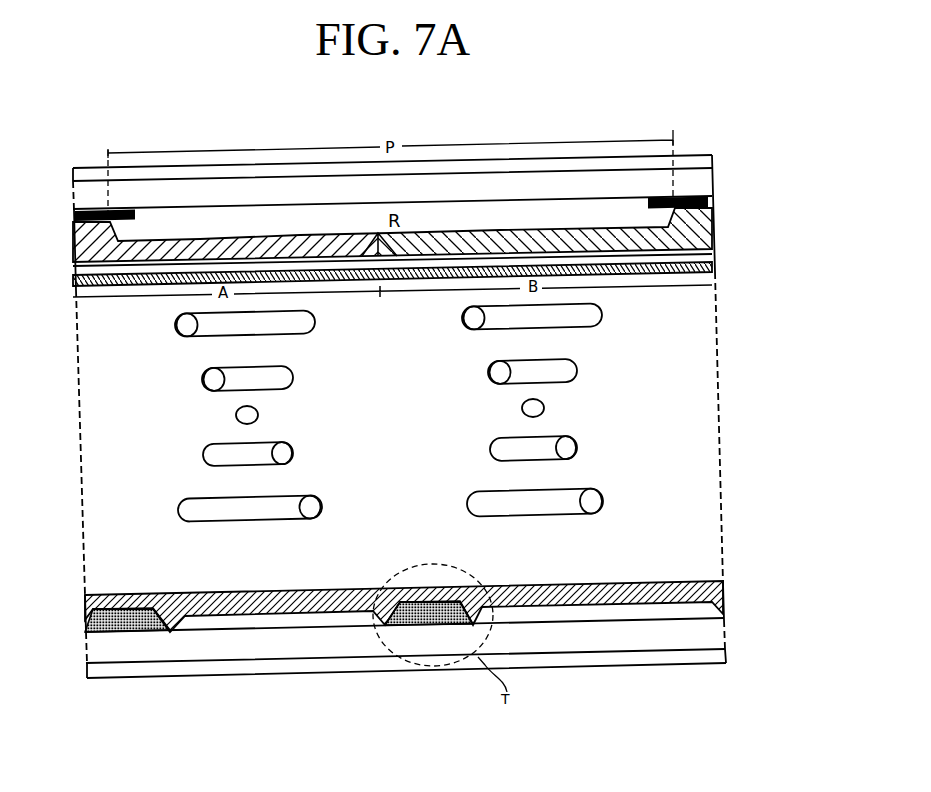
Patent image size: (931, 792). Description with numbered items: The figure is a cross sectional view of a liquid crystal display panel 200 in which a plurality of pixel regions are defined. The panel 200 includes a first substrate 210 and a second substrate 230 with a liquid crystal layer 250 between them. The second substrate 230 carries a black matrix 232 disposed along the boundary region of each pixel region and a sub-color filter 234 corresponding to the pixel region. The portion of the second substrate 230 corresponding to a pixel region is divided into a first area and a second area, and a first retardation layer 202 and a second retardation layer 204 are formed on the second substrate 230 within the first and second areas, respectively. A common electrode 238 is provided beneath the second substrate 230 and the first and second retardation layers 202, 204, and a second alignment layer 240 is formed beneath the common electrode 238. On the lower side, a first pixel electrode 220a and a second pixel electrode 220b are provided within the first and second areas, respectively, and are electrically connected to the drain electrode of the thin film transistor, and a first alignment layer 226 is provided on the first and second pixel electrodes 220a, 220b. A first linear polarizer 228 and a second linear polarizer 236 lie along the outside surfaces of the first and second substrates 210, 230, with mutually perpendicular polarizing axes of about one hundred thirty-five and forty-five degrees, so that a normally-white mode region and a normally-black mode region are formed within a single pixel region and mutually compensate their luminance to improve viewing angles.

The liquid crystal display panel 200 is at (68, 680).
The first retardation layer 202 is at (220, 239).
The second retardation layer 204 is at (523, 237).
The first substrate 210 is at (723, 634).
The first pixel electrode 220a is at (272, 620).
The second pixel electrode 220b is at (610, 616).
The first alignment layer 226 is at (724, 590).
The first linear polarizer 228 is at (724, 655).
The second substrate 230 is at (713, 180).
The black matrix 232 is at (712, 199).
The sub-color filter 234 is at (712, 224).
The second linear polarizer 236 is at (713, 161).
The common electrode 238 is at (713, 255).
The second alignment layer 240 is at (713, 270).
The liquid crystal layer 250 is at (607, 315).